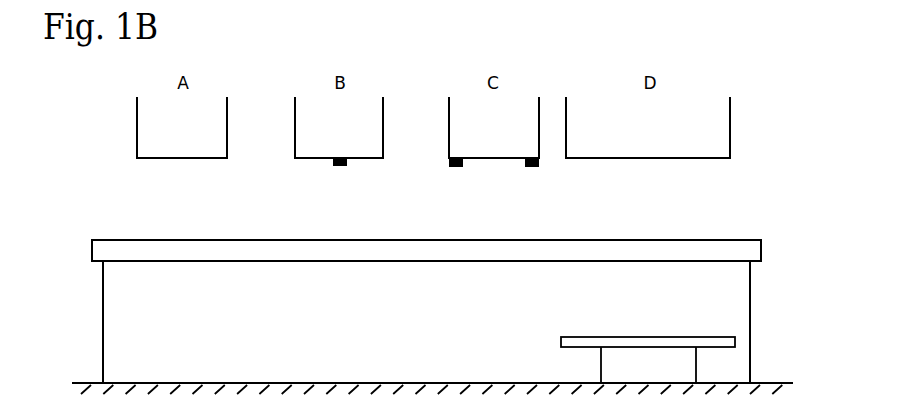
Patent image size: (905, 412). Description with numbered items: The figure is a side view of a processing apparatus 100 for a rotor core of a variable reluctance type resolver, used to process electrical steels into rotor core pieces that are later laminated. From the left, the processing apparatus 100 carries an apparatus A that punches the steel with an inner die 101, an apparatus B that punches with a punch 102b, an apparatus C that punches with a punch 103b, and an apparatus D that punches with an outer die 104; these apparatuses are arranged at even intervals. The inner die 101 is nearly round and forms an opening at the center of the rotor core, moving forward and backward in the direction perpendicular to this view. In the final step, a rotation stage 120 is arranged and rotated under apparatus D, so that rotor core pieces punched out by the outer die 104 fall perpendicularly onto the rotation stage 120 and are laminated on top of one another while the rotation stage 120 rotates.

The processing apparatus 100 is at (731, 238).
The inner die 101 is at (203, 162).
The punch 102b is at (340, 166).
The punch 103b is at (455, 167).
The outer die 104 is at (643, 159).
The rotation stage 120 is at (561, 342).